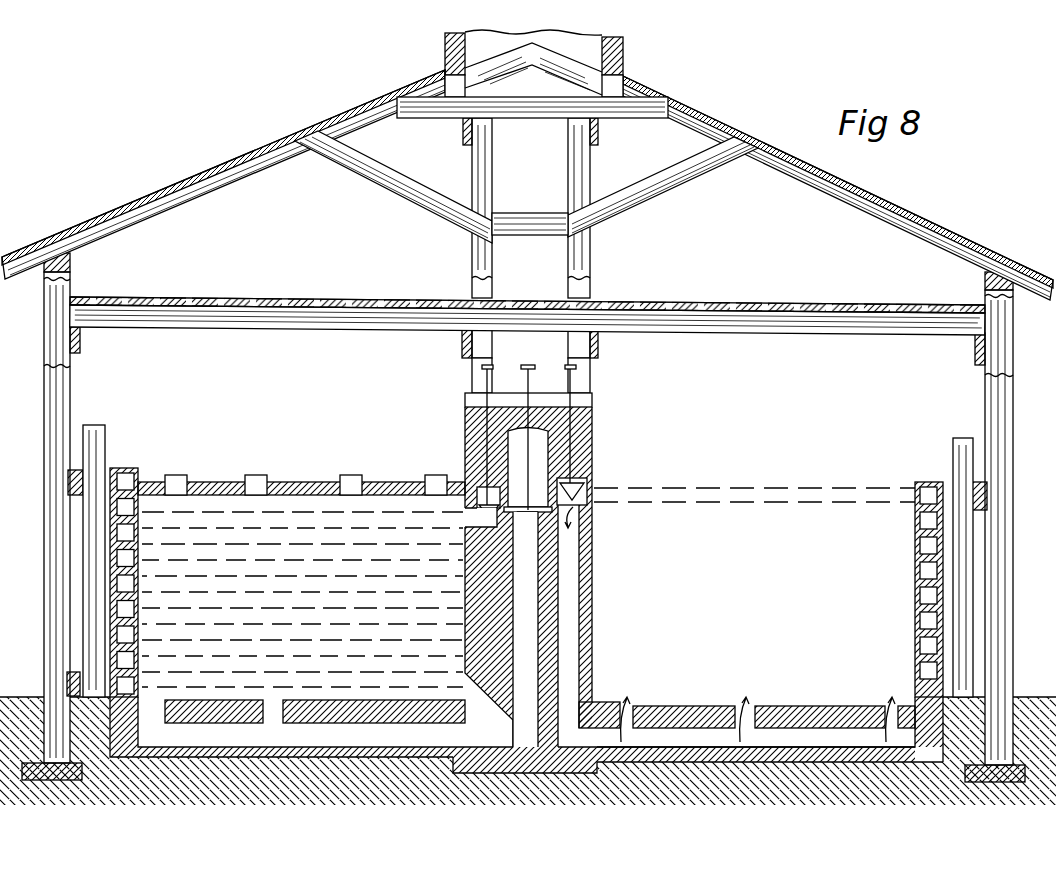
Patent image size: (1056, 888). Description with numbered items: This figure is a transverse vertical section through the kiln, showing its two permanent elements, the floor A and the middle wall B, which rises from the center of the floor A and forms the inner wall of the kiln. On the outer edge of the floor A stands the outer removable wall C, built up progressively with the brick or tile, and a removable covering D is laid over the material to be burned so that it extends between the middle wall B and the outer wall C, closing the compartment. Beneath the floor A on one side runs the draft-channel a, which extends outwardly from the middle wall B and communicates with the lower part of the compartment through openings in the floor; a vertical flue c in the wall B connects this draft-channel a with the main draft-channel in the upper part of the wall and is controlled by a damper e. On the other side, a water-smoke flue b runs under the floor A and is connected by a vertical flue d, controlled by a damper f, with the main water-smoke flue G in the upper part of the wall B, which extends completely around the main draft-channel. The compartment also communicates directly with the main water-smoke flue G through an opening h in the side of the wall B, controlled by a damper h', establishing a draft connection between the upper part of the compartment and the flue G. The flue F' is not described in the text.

The outer removable wall C is at (133, 470).
The removable covering D is at (301, 474).
The main water-smoke flue G is at (482, 492).
The damper h' is at (461, 435).
The opening h is at (459, 536).
The damper e is at (527, 425).
The cap plate F' is at (547, 403).
The wall B is at (540, 447).
The damper f is at (575, 490).
The vertical flue c is at (525, 629).
The vertical flue d is at (575, 653).
The floor A is at (540, 700).
The water-smoke flue b is at (760, 735).
The draft-channel a is at (526, 735).